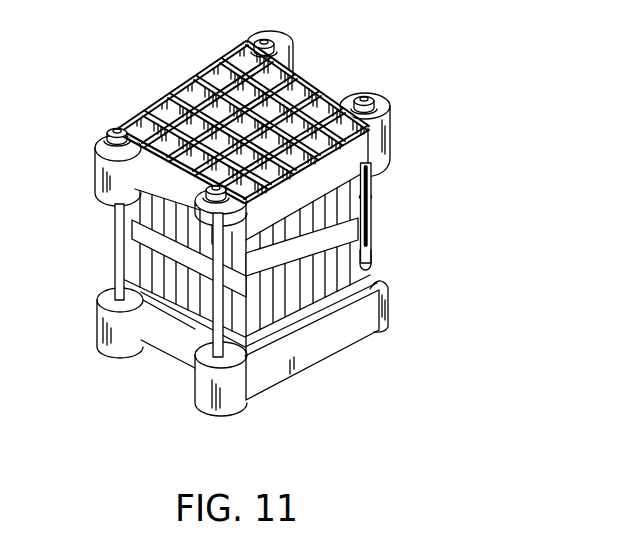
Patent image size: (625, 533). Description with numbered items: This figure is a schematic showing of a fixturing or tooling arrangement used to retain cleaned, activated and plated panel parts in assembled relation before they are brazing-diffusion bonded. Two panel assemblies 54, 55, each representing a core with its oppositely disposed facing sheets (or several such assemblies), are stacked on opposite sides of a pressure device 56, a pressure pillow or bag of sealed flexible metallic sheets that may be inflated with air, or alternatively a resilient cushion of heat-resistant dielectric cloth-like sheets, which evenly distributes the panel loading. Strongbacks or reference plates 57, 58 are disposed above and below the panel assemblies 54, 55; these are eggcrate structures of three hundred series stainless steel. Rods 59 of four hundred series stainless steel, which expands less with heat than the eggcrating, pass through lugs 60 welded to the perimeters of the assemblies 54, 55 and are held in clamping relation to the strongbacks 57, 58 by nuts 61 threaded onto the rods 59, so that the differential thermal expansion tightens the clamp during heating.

The panel assembly 54 is at (362, 198).
The panel assembly 55 is at (366, 254).
The pressure device 56 is at (360, 228).
The reference plate 57 is at (372, 174).
The reference plate 58 is at (264, 384).
The rod 59 is at (265, 40).
The lug 60 is at (296, 33).
The nut 61 is at (274, 52).